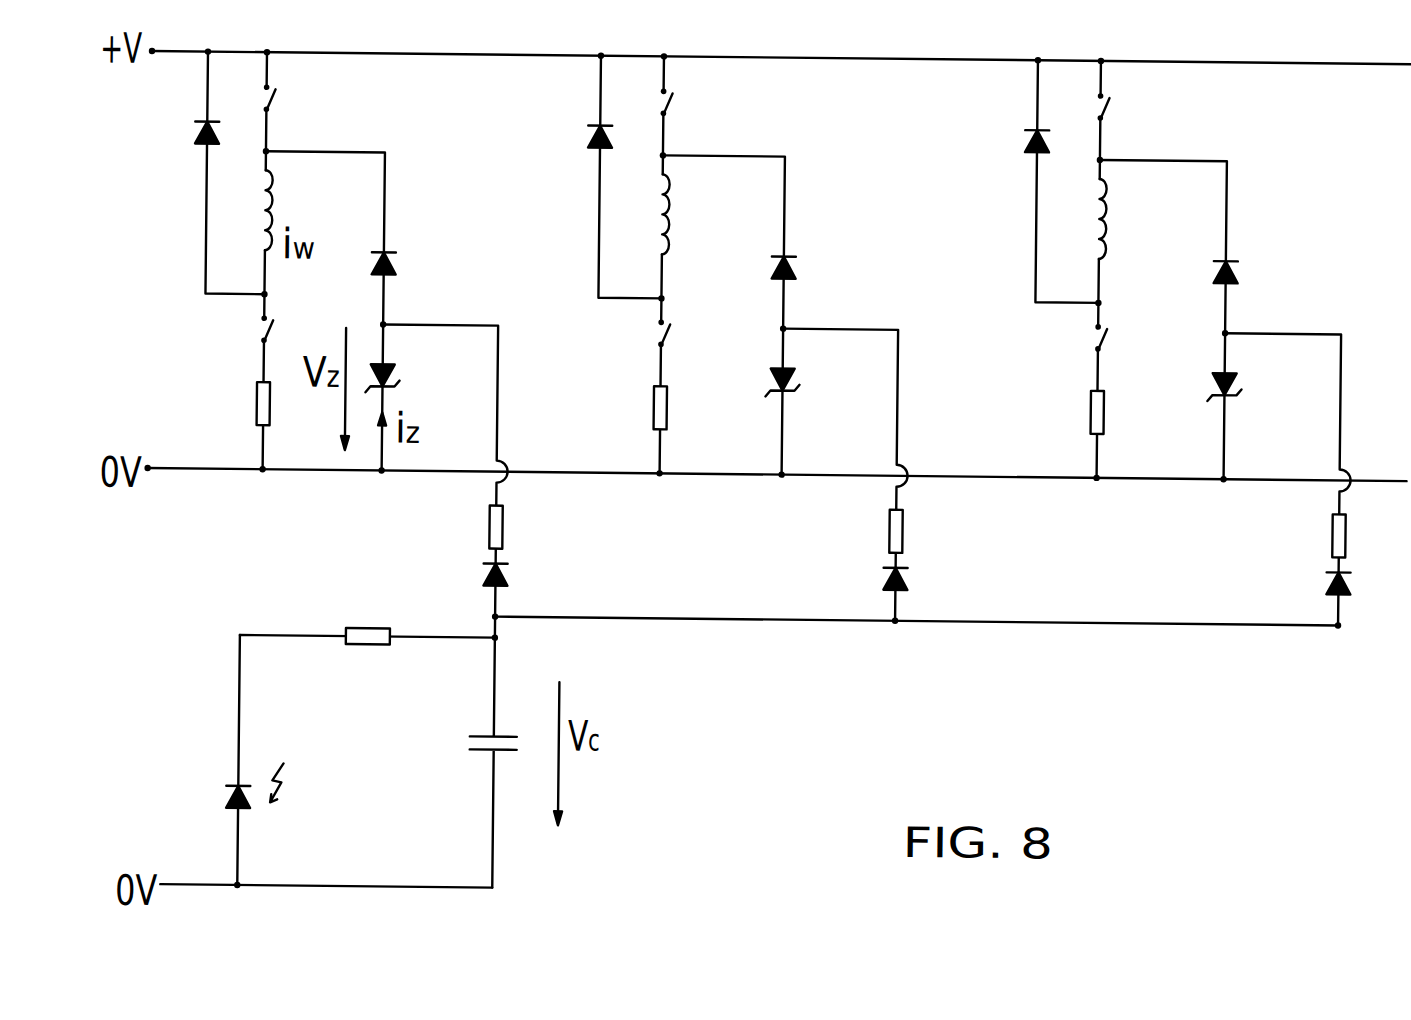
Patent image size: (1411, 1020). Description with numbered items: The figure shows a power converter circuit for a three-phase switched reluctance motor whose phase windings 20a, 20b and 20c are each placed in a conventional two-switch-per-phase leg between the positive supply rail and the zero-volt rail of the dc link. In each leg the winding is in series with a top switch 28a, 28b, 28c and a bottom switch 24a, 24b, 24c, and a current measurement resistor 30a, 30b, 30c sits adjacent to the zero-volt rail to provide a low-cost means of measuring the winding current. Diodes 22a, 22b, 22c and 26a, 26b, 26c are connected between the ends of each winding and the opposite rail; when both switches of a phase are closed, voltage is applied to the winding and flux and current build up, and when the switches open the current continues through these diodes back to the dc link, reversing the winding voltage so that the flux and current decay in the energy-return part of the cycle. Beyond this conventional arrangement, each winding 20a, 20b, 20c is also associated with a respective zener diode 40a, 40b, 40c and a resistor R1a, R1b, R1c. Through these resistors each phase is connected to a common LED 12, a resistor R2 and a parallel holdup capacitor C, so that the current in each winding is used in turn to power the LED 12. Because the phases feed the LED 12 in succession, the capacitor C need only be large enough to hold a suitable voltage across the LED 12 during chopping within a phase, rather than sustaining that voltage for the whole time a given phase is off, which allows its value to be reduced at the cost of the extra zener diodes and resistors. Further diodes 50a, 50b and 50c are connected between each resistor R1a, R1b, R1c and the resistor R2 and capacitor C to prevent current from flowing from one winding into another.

The LED 12 is at (234, 795).
The winding 20a is at (275, 207).
The winding 20b is at (672, 206).
The winding 20c is at (1109, 206).
The diode 22a is at (194, 134).
The diode 22b is at (588, 134).
The diode 22c is at (1030, 134).
The bottom switch 24a is at (260, 330).
The bottom switch 24b is at (658, 330).
The bottom switch 24c is at (1093, 330).
The diode 26a is at (398, 265).
The diode 26b is at (797, 265).
The diode 26c is at (1240, 265).
The top switch 28a is at (274, 100).
The top switch 28b is at (671, 99).
The top switch 28c is at (1110, 100).
The current measurement resistor 30a is at (252, 404).
The current measurement resistor 30b is at (649, 404).
The current measurement resistor 30c is at (1086, 404).
The zener diode 40a is at (397, 366).
The zener diode 40b is at (797, 366).
The zener diode 40c is at (1239, 366).
The diode 50a is at (483, 575).
The diode 50b is at (884, 575).
The diode 50c is at (1326, 576).
The resistor R1a is at (527, 535).
The resistor R1b is at (924, 539).
The resistor R1c is at (1367, 543).
The resistor R2 is at (367, 664).
The holdup capacitor C is at (492, 762).